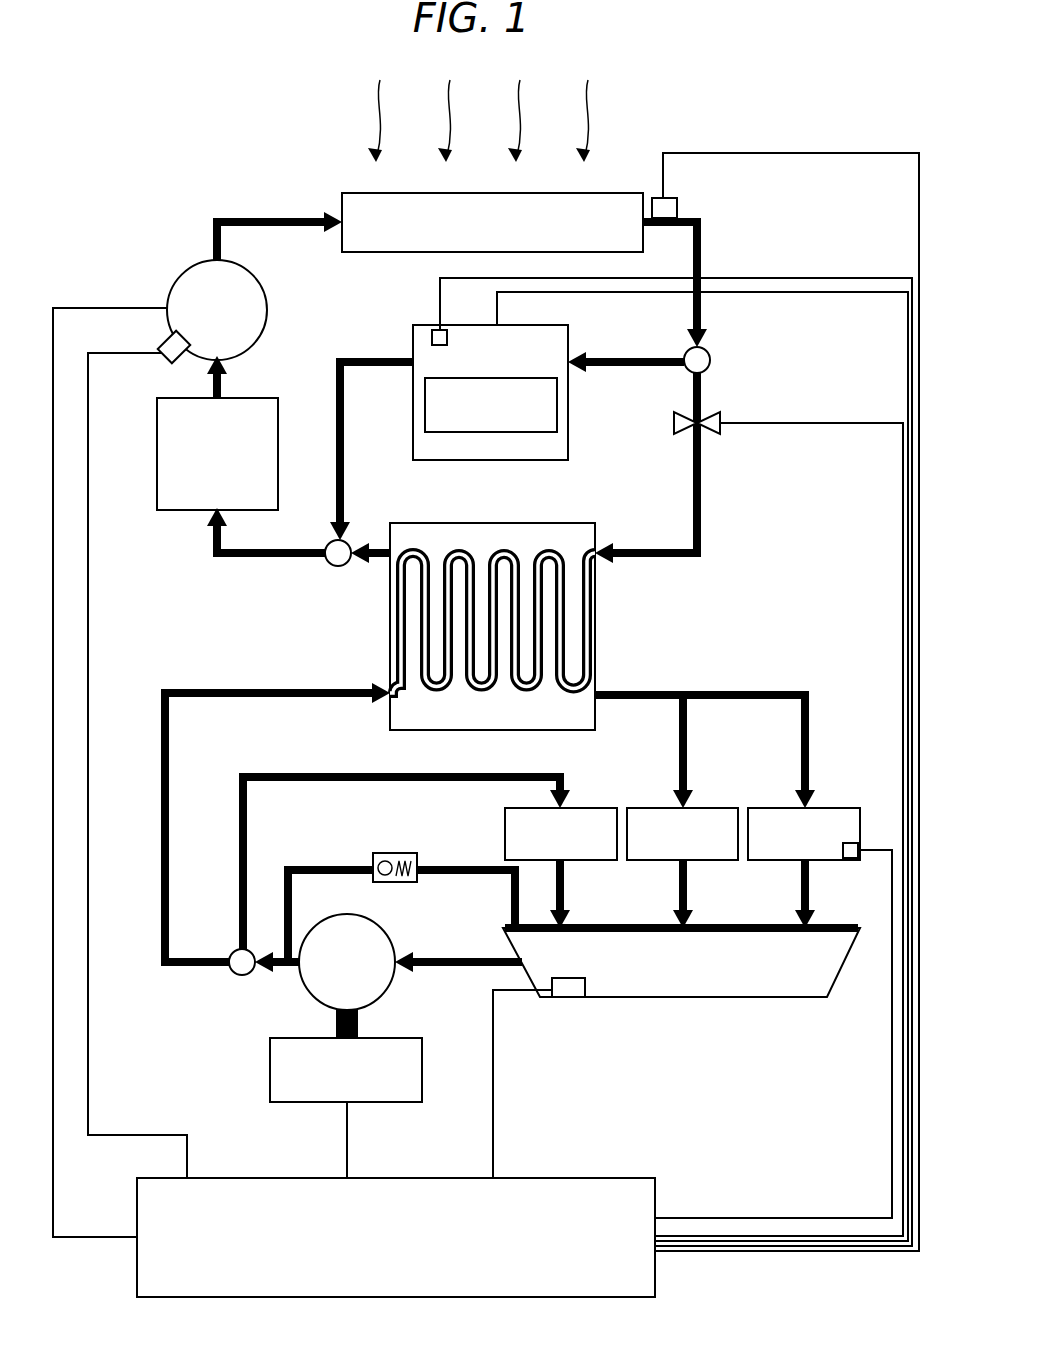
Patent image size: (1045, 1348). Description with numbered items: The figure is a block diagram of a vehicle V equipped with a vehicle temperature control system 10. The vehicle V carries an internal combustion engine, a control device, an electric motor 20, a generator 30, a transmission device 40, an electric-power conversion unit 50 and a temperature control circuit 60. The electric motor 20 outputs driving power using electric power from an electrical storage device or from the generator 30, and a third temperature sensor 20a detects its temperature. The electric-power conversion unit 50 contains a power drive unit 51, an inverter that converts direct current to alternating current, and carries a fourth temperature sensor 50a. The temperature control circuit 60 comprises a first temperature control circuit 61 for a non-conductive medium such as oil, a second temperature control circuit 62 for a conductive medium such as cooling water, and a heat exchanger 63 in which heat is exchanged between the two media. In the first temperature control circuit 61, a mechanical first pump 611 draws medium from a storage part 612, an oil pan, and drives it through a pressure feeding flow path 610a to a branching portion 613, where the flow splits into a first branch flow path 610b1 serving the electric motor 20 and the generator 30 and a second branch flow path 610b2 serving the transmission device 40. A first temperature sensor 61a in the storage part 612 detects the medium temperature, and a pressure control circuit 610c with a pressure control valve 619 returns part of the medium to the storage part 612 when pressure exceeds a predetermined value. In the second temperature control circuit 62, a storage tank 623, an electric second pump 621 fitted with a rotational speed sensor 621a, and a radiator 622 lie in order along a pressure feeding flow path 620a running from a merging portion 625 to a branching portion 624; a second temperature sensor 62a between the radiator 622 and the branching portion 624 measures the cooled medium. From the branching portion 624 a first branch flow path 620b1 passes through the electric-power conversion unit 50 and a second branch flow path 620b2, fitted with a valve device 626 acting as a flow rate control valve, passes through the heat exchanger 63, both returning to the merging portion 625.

The vehicle temperature control system 10 is at (294, 148).
The vehicle V is at (826, 128).
The electric motor 20 is at (835, 808).
The third temperature sensor 20a is at (850, 860).
The generator 30 is at (714, 808).
The transmission device 40 is at (590, 808).
The electric-power conversion unit 50 is at (526, 460).
The fourth temperature sensor 50a is at (432, 338).
The power drive unit 51 is at (425, 400).
The temperature control circuit 60 is at (712, 210).
The first temperature control circuit 61 is at (748, 665).
The first temperature sensor 61a is at (567, 997).
The second temperature control circuit 62 is at (722, 476).
The second temperature sensor 62a is at (658, 198).
The heat exchanger 63 is at (595, 612).
The pressure feeding flow path 610a is at (450, 958).
The first branch flow path 610b1 is at (168, 758).
The second branch flow path 610b2 is at (246, 850).
The pressure control circuit 610c is at (444, 870).
The first pump 611 is at (333, 920).
The storage part 612 is at (737, 997).
The branching portion 613 is at (240, 975).
The pressure control valve 619 is at (388, 856).
The pressure feeding flow path 620a is at (212, 222).
The first branch flow path 620b1 is at (630, 360).
The second branch flow path 620b2 is at (640, 548).
The second pump 621 is at (178, 284).
The rotational speed sensor 621a is at (168, 356).
The radiator 622 is at (373, 253).
The storage tank 623 is at (246, 398).
The branching portion 624 is at (712, 360).
The merging portion 625 is at (335, 567).
The valve device 626 is at (674, 420).